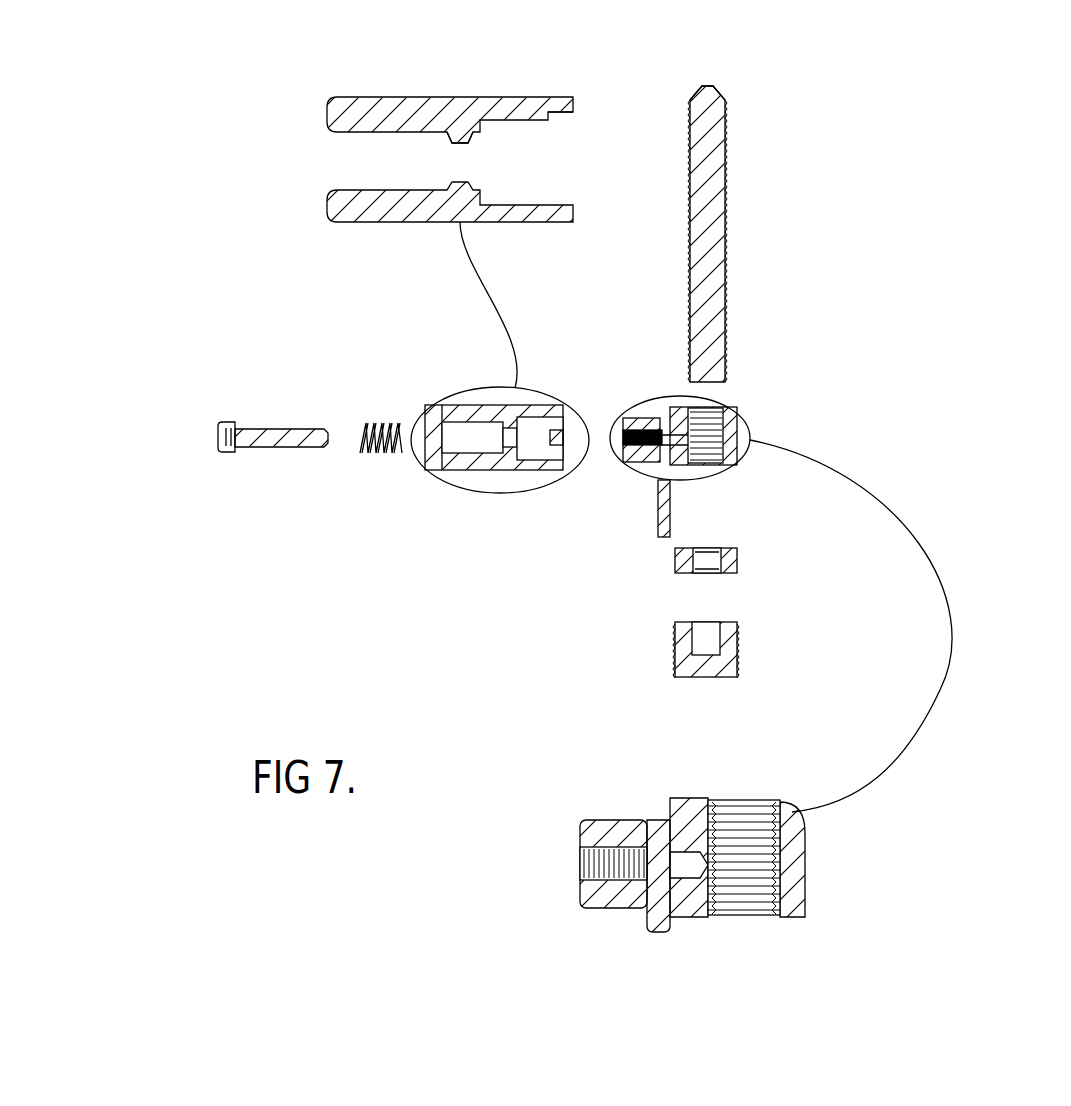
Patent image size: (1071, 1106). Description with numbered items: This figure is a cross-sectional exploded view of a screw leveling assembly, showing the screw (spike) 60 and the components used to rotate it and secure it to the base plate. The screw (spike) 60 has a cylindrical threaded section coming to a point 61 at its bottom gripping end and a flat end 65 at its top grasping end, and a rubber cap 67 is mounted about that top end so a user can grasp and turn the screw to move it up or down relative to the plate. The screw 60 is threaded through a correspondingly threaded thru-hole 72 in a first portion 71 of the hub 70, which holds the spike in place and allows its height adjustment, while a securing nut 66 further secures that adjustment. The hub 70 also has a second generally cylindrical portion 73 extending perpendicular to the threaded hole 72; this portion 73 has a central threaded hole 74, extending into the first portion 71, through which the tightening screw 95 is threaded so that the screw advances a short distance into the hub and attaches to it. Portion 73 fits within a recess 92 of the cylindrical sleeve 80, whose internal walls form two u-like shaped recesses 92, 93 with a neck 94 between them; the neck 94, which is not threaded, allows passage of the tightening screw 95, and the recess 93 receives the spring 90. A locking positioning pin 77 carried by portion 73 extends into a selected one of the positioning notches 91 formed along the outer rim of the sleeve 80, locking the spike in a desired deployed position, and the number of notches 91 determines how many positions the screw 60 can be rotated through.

The screw (spike) 60 is at (725, 172).
The point 61 is at (705, 86).
The flat end 65 is at (727, 398).
The securing nut 66 is at (737, 560).
The rubber cap 67 is at (737, 650).
The hub 70 is at (745, 430).
The first portion 71 is at (688, 798).
The threaded thru-hole 72 is at (707, 463).
The second generally cylindrical portion 73 is at (655, 462).
The central threaded hole 74 is at (625, 450).
The locking positioning pin 77 is at (670, 517).
The cylindrical sleeve 80 is at (415, 93).
The spring 90 is at (380, 425).
The positioning notches 91 is at (563, 115).
The recess 92 is at (502, 155).
The recess 93 is at (360, 143).
The neck 94 is at (460, 162).
The tightening screw 95 is at (298, 452).